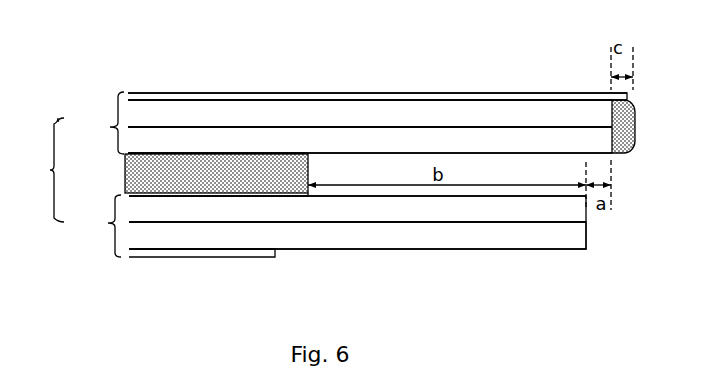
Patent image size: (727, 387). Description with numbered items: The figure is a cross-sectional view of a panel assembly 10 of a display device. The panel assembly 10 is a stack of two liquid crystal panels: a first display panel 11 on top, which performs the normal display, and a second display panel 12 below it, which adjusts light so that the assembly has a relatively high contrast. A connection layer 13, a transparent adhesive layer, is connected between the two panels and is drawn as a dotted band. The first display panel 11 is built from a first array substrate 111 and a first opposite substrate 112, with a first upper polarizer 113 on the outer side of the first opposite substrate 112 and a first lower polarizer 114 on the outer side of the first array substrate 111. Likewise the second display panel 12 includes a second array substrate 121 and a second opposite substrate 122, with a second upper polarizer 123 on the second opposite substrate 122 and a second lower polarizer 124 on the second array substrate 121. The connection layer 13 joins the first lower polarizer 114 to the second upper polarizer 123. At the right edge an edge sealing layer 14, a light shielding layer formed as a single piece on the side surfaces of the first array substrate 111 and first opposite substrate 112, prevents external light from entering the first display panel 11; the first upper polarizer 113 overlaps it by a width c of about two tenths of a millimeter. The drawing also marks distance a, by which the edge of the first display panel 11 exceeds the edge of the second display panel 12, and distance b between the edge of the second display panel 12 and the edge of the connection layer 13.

The panel assembly 10 is at (45, 170).
The first display panel 11 is at (352, 123).
The second display panel 12 is at (329, 226).
The connection layer 13 is at (138, 170).
The edge sealing layer 14 is at (635, 127).
The first array substrate 111 is at (505, 135).
The first opposite substrate 112 is at (375, 117).
The first upper polarizer 113 is at (275, 94).
The first lower polarizer 114 is at (175, 154).
The second array substrate 121 is at (468, 235).
The second opposite substrate 122 is at (377, 212).
The second upper polarizer 123 is at (180, 195).
The second lower polarizer 124 is at (245, 253).